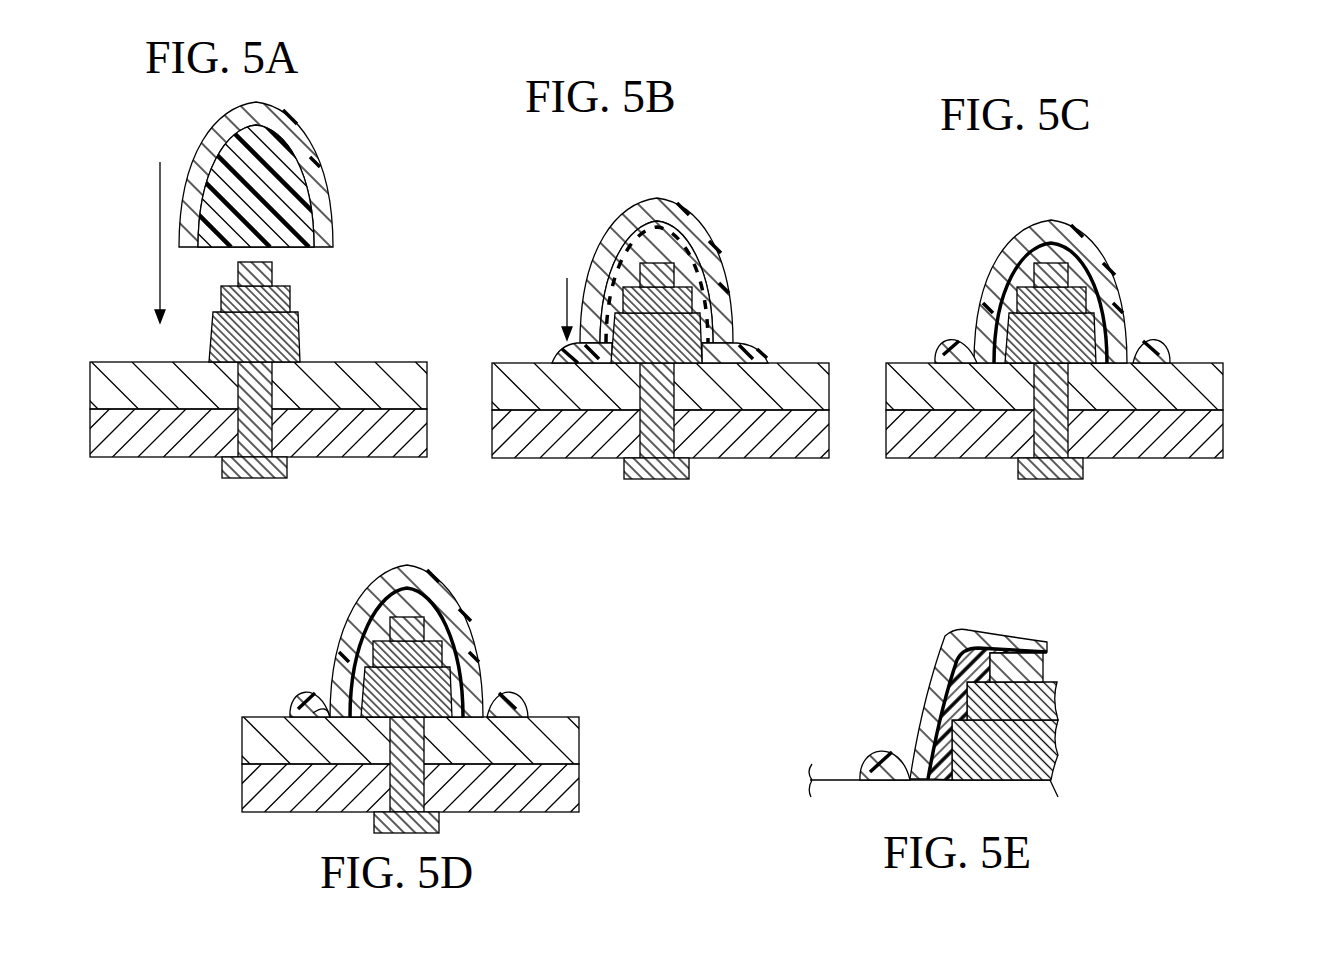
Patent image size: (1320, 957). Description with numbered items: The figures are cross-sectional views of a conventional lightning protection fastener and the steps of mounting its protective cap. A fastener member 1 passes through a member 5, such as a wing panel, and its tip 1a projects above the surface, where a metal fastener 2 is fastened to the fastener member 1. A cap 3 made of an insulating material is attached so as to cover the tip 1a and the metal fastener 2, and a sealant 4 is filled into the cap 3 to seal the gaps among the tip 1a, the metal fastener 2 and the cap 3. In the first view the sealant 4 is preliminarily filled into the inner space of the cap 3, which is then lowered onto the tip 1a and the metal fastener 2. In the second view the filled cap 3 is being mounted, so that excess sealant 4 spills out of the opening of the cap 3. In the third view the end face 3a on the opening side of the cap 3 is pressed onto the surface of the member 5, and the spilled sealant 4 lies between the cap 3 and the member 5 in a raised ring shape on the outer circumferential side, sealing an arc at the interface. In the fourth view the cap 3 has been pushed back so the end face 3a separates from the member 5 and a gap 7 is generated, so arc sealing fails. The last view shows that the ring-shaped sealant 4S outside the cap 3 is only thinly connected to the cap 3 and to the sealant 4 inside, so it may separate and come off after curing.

In FIG. 5A, the fastener member 1 is at (299, 406).
In FIG. 5B, the fastener member 1 is at (736, 403).
In FIG. 5C, the fastener member 1 is at (1128, 404).
In FIG. 5D, the fastener member 1 is at (502, 753).
In FIG. 5A, the tip of the fastener member 1a is at (311, 266).
In FIG. 5B, the tip of the fastener member 1a is at (717, 263).
In FIG. 5C, the tip of the fastener member 1a is at (1110, 264).
In FIG. 5D, the tip of the fastener member 1a is at (453, 620).
In FIG. 5E, the tip of the fastener member 1a is at (1012, 645).
In FIG. 5A, the metal fastener 2 is at (293, 324).
In FIG. 5B, the metal fastener 2 is at (700, 318).
In FIG. 5C, the metal fastener 2 is at (1092, 325).
In FIG. 5D, the metal fastener 2 is at (445, 678).
In FIG. 5A, the cap 3 is at (278, 174).
In FIG. 5B, the cap 3 is at (662, 268).
In FIG. 5C, the cap 3 is at (1056, 281).
In FIG. 5D, the cap 3 is at (406, 624).
In FIG. 5E, the cap 3 is at (940, 668).
In FIG. 5C, the end face on the opening side of the cap 3a is at (1043, 348).
In FIG. 5D, the end face on the opening side of the cap 3a is at (398, 694).
In FIG. 5A, the sealant 4 is at (258, 216).
In FIG. 5B, the sealant 4 is at (657, 292).
In FIG. 5C, the sealant 4 is at (1022, 300).
In FIG. 5D, the sealant 4 is at (389, 652).
In FIG. 5E, the sealant 4 is at (928, 685).
In FIG. 5E, the sealant on the outer circumferential side 4S is at (876, 752).
In FIG. 5A, the member 5 is at (251, 409).
In FIG. 5B, the member 5 is at (653, 410).
In FIG. 5C, the member 5 is at (1047, 410).
In FIG. 5D, the member 5 is at (410, 764).
In FIG. 5D, the gap 7 is at (321, 679).